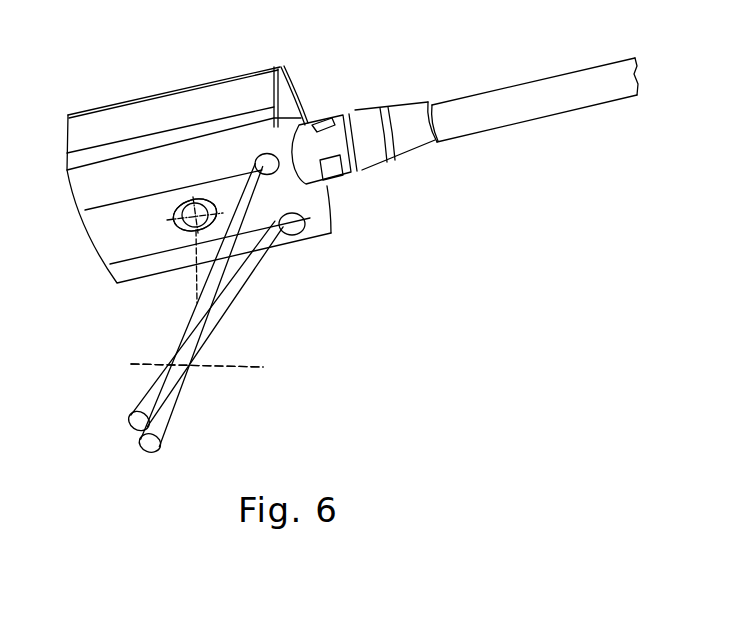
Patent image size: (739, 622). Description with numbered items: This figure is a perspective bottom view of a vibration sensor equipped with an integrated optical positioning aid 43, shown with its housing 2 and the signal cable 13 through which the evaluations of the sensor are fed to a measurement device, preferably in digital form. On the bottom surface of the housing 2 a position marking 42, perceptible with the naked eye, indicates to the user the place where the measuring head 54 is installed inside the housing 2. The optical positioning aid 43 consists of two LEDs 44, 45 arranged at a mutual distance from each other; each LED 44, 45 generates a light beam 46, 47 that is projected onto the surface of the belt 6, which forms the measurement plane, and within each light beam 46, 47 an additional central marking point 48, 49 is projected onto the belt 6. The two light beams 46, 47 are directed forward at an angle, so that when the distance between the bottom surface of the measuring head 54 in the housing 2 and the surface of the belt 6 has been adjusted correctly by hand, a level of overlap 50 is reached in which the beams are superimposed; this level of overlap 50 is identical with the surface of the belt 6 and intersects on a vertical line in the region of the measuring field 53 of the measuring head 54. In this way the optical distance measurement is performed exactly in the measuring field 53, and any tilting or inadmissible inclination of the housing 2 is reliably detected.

The housing 2 is at (237, 78).
The signal cable 13 is at (485, 108).
The position marking 42 is at (189, 233).
The measuring head 54 is at (195, 214).
The measuring field 53 is at (196, 283).
The optical positioning aid 43 is at (326, 196).
The LED 44 is at (268, 157).
The LED 45 is at (305, 233).
The light beam 46 is at (203, 323).
The light beam 47 is at (243, 287).
The central marking point 48 is at (149, 453).
The central marking point 49 is at (137, 432).
The belt 6 is at (249, 368).
The level of overlap 50 is at (197, 365).